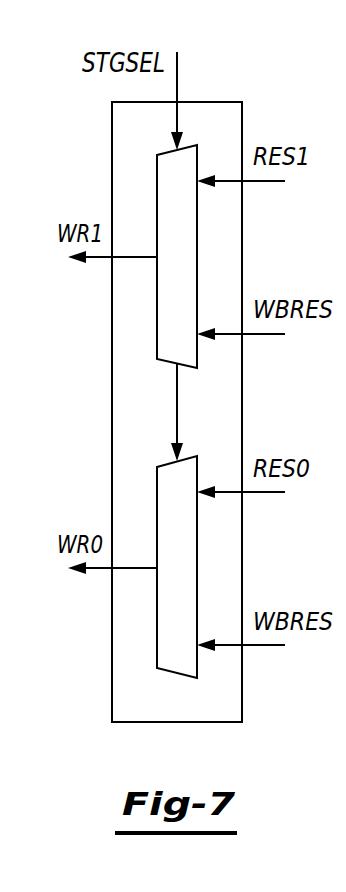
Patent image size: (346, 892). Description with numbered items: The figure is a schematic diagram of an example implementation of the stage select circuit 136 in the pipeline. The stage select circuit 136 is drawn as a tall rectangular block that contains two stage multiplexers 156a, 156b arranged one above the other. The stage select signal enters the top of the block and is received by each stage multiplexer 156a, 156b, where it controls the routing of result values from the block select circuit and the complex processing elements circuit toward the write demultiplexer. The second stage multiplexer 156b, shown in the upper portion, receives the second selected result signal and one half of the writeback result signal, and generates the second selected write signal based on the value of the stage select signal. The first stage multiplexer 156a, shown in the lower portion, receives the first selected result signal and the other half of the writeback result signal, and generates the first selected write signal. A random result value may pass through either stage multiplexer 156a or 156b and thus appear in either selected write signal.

The stage select circuit 136 is at (213, 102).
The first stage multiplexer 156a is at (196, 562).
The second stage multiplexer 156b is at (196, 252).